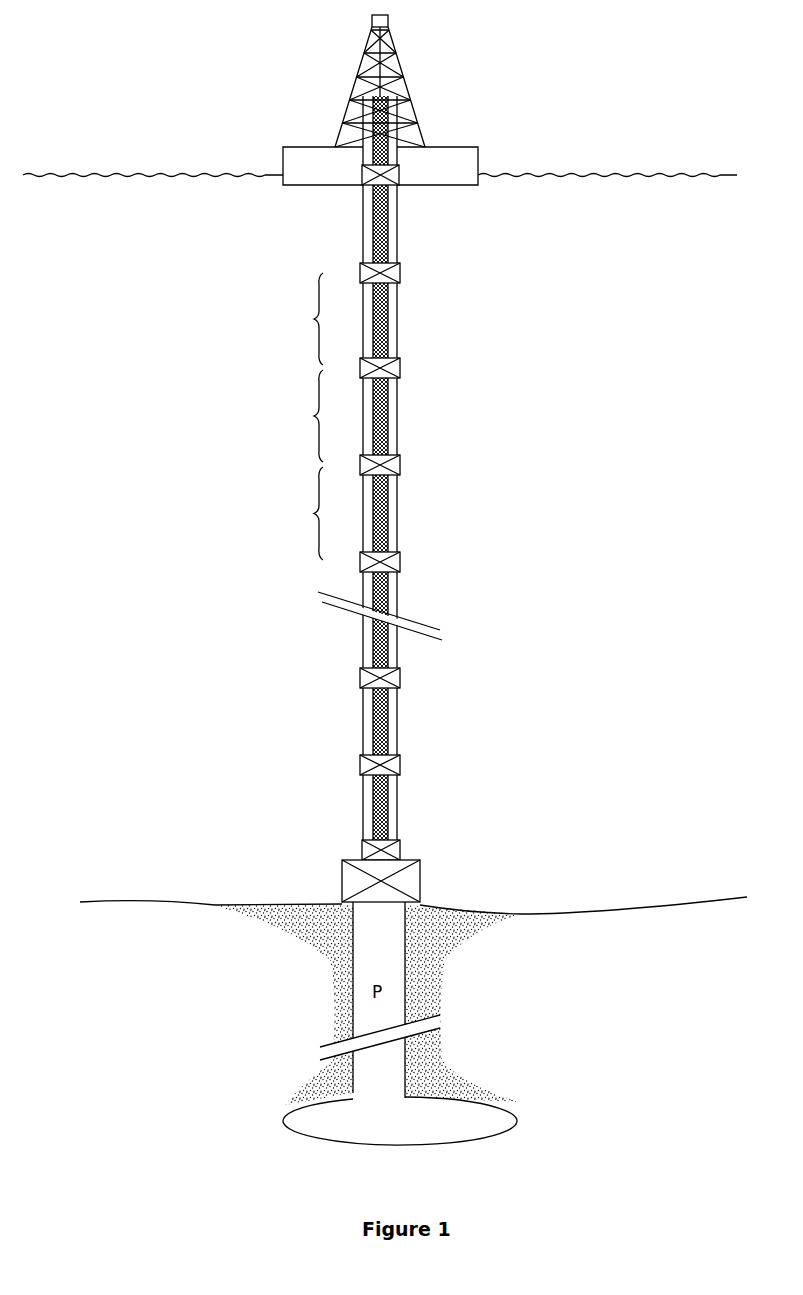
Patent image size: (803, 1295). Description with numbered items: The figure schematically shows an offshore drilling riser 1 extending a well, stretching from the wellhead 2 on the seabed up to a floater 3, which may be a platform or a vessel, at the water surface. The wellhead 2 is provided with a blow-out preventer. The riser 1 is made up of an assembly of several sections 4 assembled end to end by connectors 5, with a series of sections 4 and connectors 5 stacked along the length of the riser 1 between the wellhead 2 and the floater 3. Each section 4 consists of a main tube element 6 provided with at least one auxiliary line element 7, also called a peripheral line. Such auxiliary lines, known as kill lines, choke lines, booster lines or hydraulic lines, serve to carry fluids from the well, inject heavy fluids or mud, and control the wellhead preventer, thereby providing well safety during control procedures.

The offshore drilling riser 1 is at (200, 280).
The wellhead 2 is at (420, 876).
The floater 3 is at (478, 161).
The section 4 is at (308, 416).
The connector 5 is at (405, 273).
The main tube element 6 is at (388, 517).
The auxiliary line element 7 is at (398, 422).